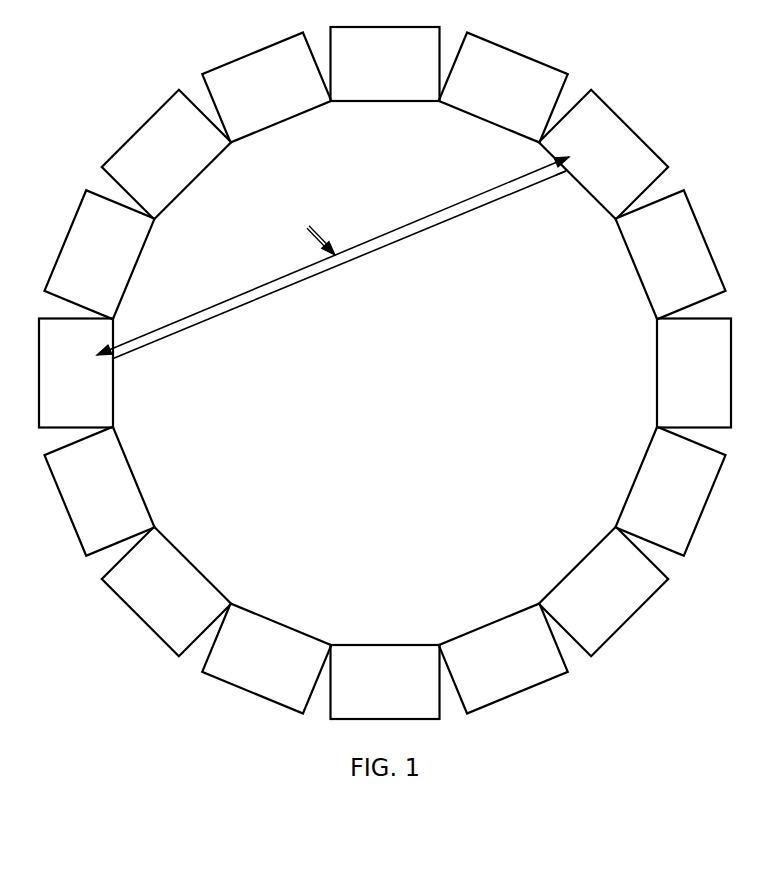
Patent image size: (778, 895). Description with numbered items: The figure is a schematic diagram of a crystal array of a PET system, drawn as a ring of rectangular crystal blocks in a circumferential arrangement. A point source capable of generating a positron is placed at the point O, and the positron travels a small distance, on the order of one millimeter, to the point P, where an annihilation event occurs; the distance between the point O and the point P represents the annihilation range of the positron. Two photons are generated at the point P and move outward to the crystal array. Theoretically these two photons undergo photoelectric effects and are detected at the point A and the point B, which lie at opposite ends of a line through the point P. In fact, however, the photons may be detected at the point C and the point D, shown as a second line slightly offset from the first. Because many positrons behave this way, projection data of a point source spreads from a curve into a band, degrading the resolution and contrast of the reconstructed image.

The point A is at (321, 259).
The point B is at (573, 146).
The point C is at (339, 279).
The point D is at (562, 189).
The point O is at (309, 224).
The point P is at (336, 244).